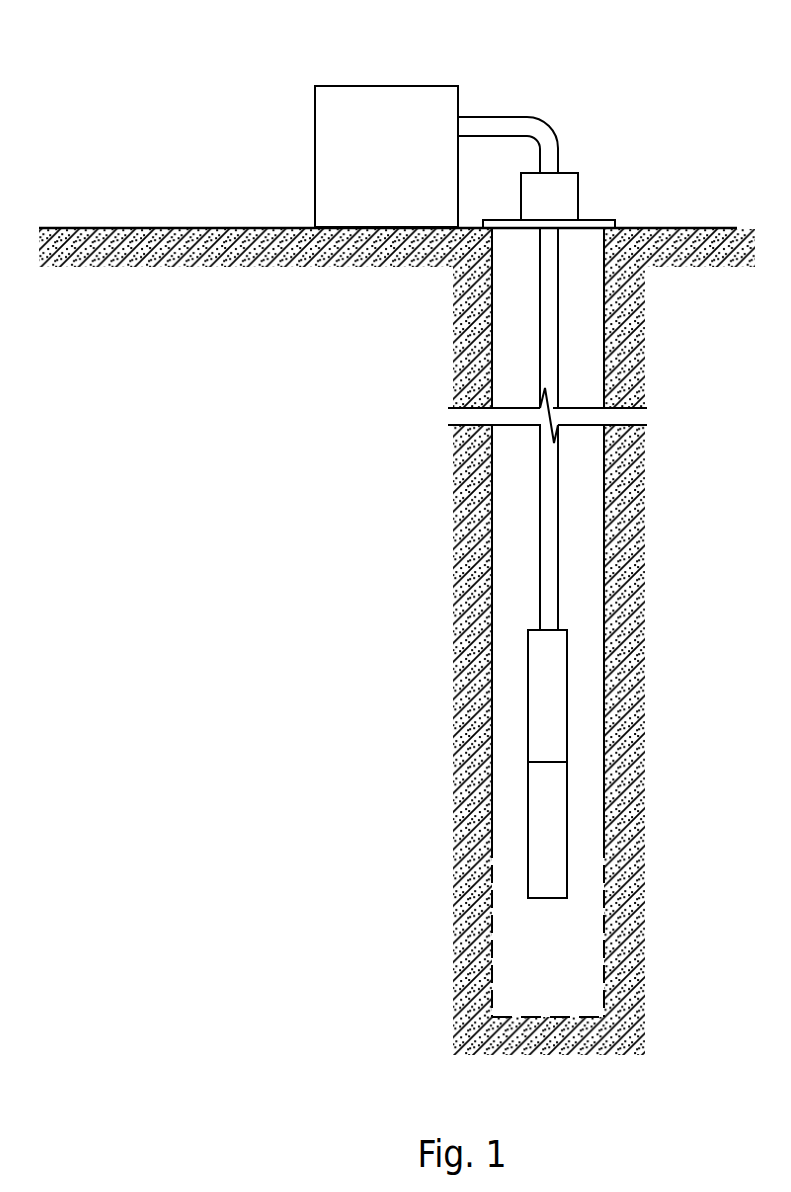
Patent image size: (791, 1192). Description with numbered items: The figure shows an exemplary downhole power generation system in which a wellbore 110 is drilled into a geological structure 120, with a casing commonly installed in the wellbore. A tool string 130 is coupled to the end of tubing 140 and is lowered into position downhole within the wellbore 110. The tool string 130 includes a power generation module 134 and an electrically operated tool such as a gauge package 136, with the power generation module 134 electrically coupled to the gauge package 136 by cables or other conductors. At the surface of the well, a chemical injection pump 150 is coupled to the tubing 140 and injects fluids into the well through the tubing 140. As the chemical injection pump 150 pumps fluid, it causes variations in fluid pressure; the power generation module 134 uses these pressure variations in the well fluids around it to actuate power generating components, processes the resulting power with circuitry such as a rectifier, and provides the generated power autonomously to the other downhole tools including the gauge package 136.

The wellbore 110 is at (606, 592).
The geological structure 120 is at (386, 338).
The tool string 130 is at (541, 764).
The power generation module 134 is at (567, 728).
The gauge package 136 is at (610, 830).
The tubing 140 is at (558, 489).
The chemical injection pump 150 is at (383, 86).